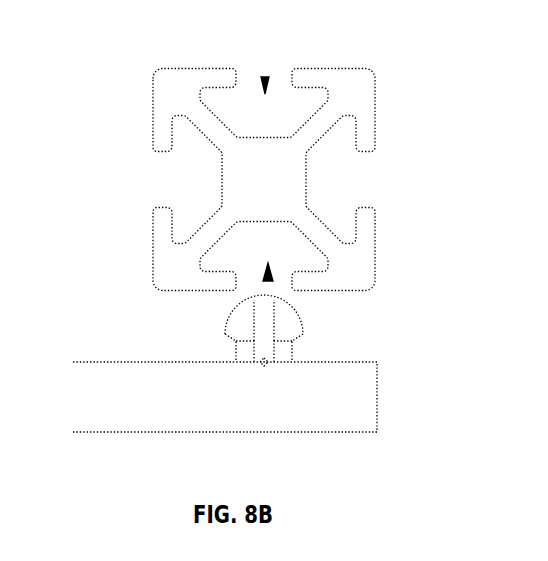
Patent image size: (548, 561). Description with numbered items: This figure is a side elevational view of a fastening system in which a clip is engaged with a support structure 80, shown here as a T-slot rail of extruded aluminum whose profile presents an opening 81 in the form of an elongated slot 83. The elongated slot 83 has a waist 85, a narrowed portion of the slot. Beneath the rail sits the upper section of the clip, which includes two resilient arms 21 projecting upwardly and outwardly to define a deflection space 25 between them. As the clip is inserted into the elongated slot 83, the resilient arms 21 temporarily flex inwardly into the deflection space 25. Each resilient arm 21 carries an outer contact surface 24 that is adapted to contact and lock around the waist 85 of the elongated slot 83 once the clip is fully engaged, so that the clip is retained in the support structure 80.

The opening 81 is at (162, 212).
The elongated slot 83 is at (265, 78).
The waist 85 is at (237, 75).
The resilient arm 21 is at (283, 313).
The outer contact surface 24 is at (295, 340).
The deflection space 25 is at (260, 330).
The support structure 80 is at (333, 290).